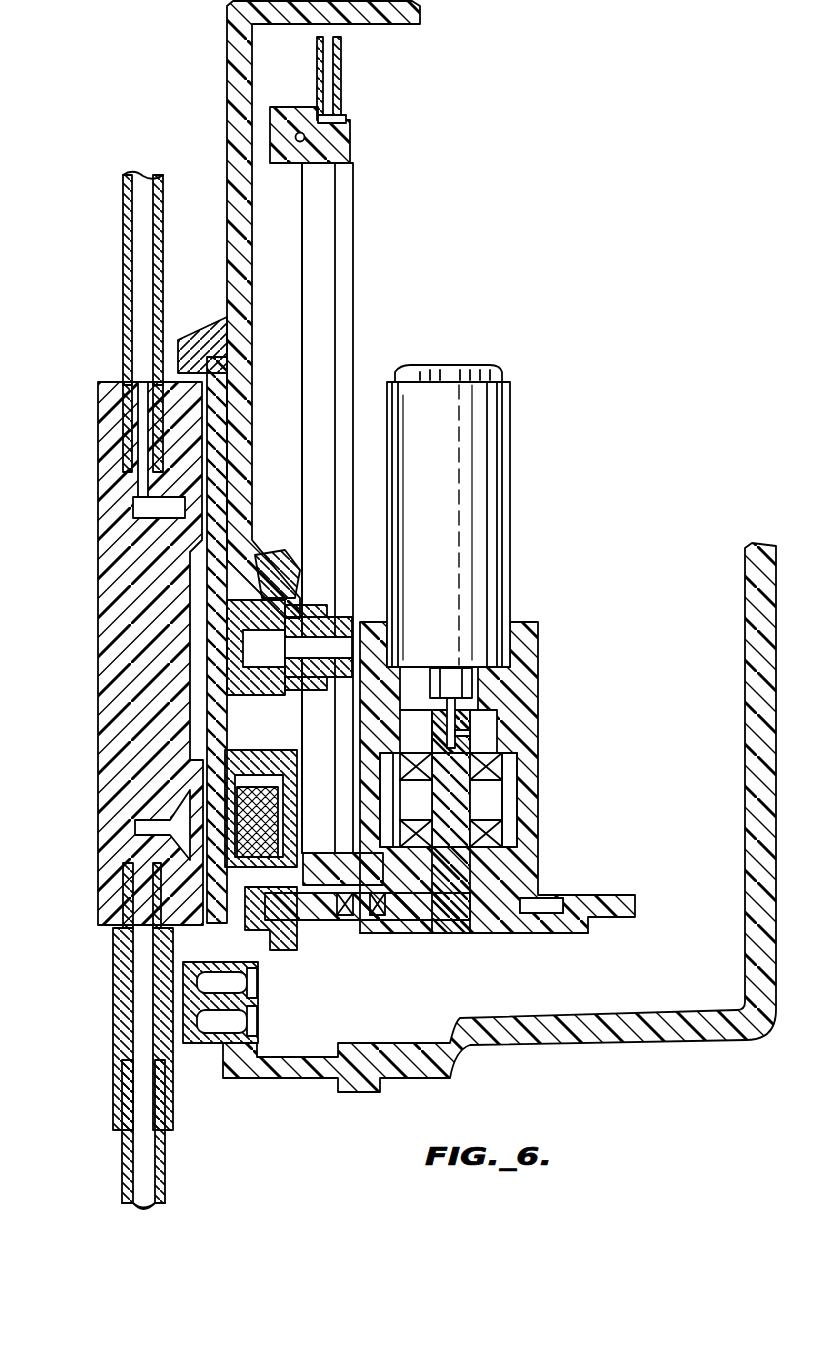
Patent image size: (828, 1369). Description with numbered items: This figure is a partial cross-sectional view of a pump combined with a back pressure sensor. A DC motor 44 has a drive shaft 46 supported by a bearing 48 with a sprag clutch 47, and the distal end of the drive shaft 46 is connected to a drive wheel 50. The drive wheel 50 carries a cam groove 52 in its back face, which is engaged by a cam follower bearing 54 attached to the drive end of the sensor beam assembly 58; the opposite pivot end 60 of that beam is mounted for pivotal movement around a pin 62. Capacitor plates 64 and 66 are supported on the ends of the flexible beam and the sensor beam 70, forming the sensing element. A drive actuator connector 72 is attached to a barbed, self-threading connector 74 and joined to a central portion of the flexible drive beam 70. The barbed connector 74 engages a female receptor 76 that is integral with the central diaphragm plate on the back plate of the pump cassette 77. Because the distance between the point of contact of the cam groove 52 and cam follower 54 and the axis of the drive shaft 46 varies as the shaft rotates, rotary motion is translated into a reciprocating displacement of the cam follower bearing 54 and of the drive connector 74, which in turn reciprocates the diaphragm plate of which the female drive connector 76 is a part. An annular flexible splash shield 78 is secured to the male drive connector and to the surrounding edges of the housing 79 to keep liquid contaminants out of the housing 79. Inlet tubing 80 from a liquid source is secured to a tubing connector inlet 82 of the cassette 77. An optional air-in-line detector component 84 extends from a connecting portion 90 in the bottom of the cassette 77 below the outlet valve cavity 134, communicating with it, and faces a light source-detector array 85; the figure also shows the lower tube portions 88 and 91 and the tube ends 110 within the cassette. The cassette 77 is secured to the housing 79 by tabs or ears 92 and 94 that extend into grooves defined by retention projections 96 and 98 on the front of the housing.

The DC motor 44 is at (505, 500).
The drive shaft 46 is at (465, 745).
The sprag clutch 47 is at (495, 800).
The bearing 48 is at (490, 768).
The drive wheel 50 is at (552, 933).
The cam groove 52 is at (540, 898).
The cam follower bearing 54 is at (388, 918).
The sensor beam assembly 58 is at (370, 300).
The pivot end 60 is at (350, 150).
The pin 62 is at (300, 142).
The capacitor plate 64 is at (317, 78).
The capacitor plate 66 is at (341, 78).
The sensor beam 70 is at (353, 245).
The drive actuator connector 72 is at (312, 292).
The barbed, self-threading connector 74 is at (325, 612).
The female receptor 76 is at (212, 650).
The pump cassette 77 is at (96, 745).
The annular flexible splash shield 78 is at (297, 580).
The housing 79 is at (227, 62).
The inlet tubing 80 is at (123, 282).
The tubing connector inlet 82 is at (133, 505).
The air-in-line detector component 84 is at (115, 992).
The light source-detector array 85 is at (210, 1047).
The inner tube end 88 is at (122, 1162).
The connecting portion 90 is at (128, 885).
The inner tube 91 is at (122, 1100).
The tab 92 is at (212, 352).
The tab 94 is at (262, 944).
The retention projection 96 is at (216, 330).
The retention projection 98 is at (268, 967).
The tube ends 110 is at (128, 462).
The outlet valve cavity 134 is at (140, 828).